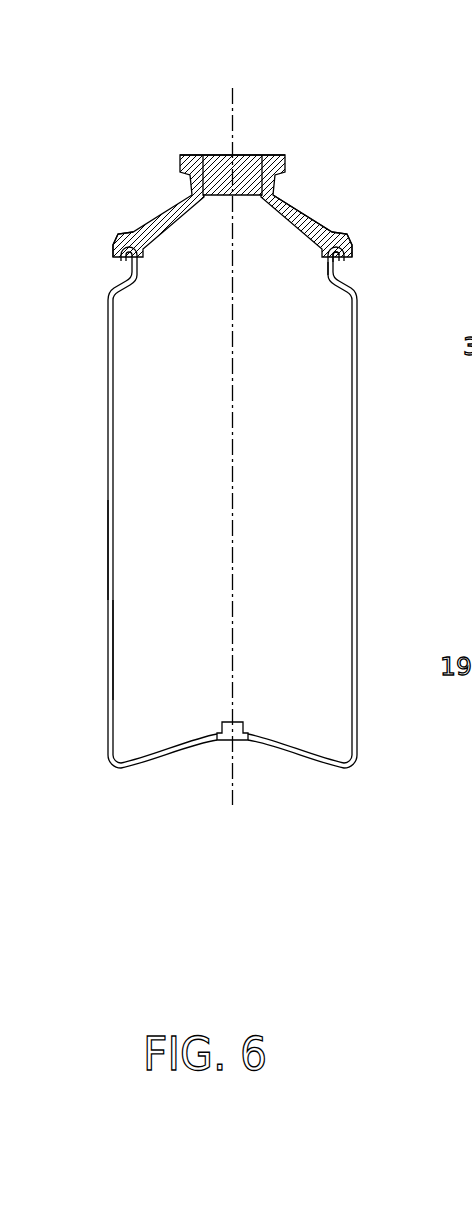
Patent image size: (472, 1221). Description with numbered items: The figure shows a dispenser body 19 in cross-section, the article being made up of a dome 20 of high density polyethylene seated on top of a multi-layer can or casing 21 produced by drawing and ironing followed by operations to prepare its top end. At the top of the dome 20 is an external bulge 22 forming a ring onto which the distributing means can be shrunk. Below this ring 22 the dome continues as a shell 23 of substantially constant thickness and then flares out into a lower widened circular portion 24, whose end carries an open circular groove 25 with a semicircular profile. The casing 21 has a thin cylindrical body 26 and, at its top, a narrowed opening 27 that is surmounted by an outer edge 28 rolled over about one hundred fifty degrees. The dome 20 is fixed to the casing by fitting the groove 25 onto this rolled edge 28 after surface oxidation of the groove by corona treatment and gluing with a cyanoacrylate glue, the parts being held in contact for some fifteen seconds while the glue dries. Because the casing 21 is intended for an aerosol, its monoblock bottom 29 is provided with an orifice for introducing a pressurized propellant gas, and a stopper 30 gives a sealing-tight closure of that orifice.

The dispenser body 19 is at (104, 325).
The dome 20 is at (167, 233).
The casing 21 is at (104, 532).
The external bulge 22 is at (180, 163).
The shell 23 is at (290, 200).
The lower widened circular portion 24 is at (123, 224).
The open circular groove 25 is at (349, 234).
The cylindrical body 26 is at (110, 642).
The narrowed opening 27 is at (327, 265).
The outer edge 28 is at (344, 258).
The monoblock bottom 29 is at (280, 741).
The stopper 30 is at (224, 741).